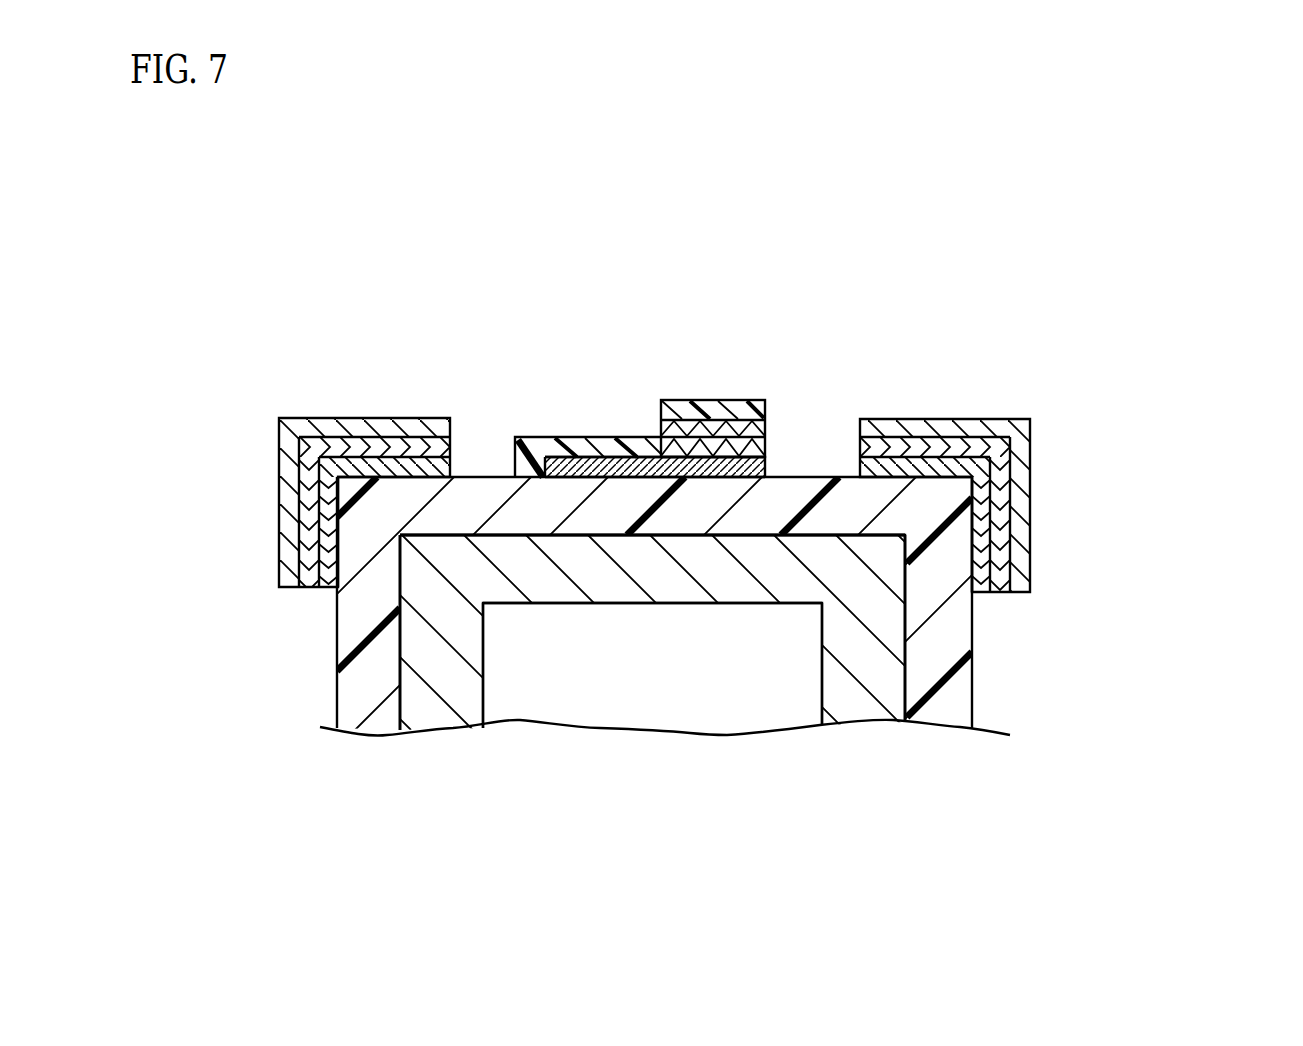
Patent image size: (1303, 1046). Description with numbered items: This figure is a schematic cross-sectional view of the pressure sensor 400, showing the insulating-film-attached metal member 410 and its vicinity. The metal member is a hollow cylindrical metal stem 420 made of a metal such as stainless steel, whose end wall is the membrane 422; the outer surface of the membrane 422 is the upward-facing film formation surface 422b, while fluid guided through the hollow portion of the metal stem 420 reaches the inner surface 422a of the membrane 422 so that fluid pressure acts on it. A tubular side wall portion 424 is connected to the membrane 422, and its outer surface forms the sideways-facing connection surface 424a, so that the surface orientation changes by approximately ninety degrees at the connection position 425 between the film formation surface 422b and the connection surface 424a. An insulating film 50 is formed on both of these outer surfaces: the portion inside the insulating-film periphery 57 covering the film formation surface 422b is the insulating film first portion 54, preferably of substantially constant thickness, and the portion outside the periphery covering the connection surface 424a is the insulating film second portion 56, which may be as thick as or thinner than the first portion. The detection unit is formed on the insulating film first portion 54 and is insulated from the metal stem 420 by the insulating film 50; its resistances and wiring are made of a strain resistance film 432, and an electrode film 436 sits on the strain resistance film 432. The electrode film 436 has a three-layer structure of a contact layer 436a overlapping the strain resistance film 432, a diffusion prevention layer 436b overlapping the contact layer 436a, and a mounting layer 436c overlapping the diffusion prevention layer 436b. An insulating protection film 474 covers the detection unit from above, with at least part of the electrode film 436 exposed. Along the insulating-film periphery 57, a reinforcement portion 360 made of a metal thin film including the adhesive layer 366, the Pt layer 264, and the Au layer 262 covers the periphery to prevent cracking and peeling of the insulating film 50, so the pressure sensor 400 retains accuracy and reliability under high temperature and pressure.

The pressure sensor 400 is at (862, 215).
The insulating-film-attached metal member 410 is at (1112, 308).
The metal stem 420 is at (707, 703).
The membrane 422 is at (613, 578).
The inner surface 422a is at (668, 604).
The film formation surface 422b is at (777, 530).
The tubular side wall portion 424 is at (440, 680).
The connection surface 424a is at (400, 687).
The connection position 425 is at (399, 535).
The insulating film 50 is at (565, 508).
The insulating film first portion 54 is at (823, 523).
The insulating film second portion 56 is at (357, 633).
The insulating-film periphery 57 is at (280, 475).
The Au layer 262 is at (318, 418).
The Pt layer 264 is at (362, 447).
The adhesive layer 366 is at (450, 456).
The reinforcement portion 360 is at (277, 393).
The strain resistance film 432 is at (590, 445).
The protection film 474 is at (615, 457).
The electrode film 436 is at (749, 393).
The contact layer 436a is at (680, 437).
The diffusion prevention layer 436b is at (712, 437).
The mounting layer 436c is at (740, 400).